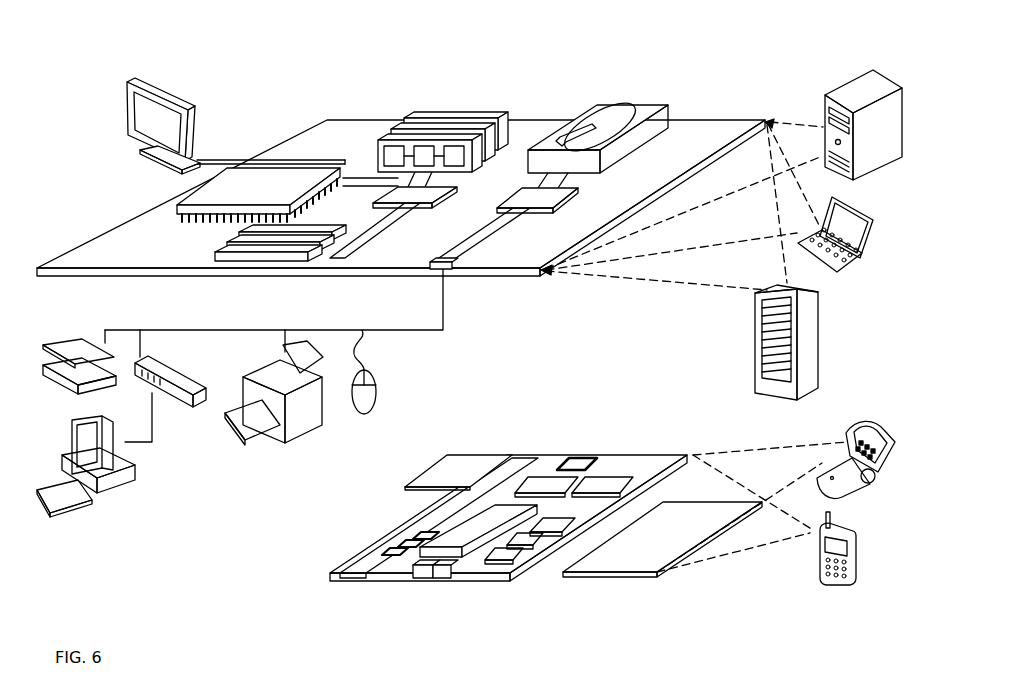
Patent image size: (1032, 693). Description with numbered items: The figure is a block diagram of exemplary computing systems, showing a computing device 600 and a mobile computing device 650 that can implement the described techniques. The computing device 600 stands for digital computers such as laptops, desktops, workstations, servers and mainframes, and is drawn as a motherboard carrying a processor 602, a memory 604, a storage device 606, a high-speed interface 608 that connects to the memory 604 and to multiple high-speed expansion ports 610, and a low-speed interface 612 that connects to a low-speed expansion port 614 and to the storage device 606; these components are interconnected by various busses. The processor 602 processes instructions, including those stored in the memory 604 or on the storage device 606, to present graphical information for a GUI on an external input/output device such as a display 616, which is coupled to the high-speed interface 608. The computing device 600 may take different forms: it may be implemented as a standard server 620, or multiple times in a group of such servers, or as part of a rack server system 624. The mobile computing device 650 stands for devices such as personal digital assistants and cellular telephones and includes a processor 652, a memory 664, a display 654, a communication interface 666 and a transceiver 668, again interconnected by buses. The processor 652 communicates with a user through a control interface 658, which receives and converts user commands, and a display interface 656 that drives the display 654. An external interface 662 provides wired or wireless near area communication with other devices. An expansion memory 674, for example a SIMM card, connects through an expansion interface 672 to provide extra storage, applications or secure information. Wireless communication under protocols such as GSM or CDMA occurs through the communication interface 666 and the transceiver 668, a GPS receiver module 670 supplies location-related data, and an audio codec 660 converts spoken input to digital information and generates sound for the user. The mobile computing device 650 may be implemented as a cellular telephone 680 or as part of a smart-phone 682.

The computing device 600 is at (272, 100).
The processor 602 is at (177, 207).
The memory 604 is at (418, 118).
The storage device 606 is at (592, 106).
The high-speed interface 608 is at (357, 188).
The high-speed expansion ports 610 is at (222, 253).
The low-speed interface 612 is at (522, 195).
The low-speed expansion port 614 is at (450, 272).
The display 616 is at (128, 86).
The standard server 620 is at (824, 113).
The rack server system 624 is at (755, 365).
The mobile computing device 650 is at (318, 582).
The processor 652 is at (458, 548).
The display 654 is at (633, 562).
The display interface 656 is at (512, 553).
The control interface 658 is at (530, 540).
The audio codec 660 is at (550, 525).
The external interface 662 is at (433, 580).
The memory 664 is at (392, 544).
The communication interface 666 is at (547, 482).
The transceiver 668 is at (605, 480).
The GPS receiver module 670 is at (583, 456).
The expansion interface 672 is at (484, 466).
The expansion memory 674 is at (438, 466).
The cellular telephone 680 is at (856, 430).
The smart-phone 682 is at (818, 555).